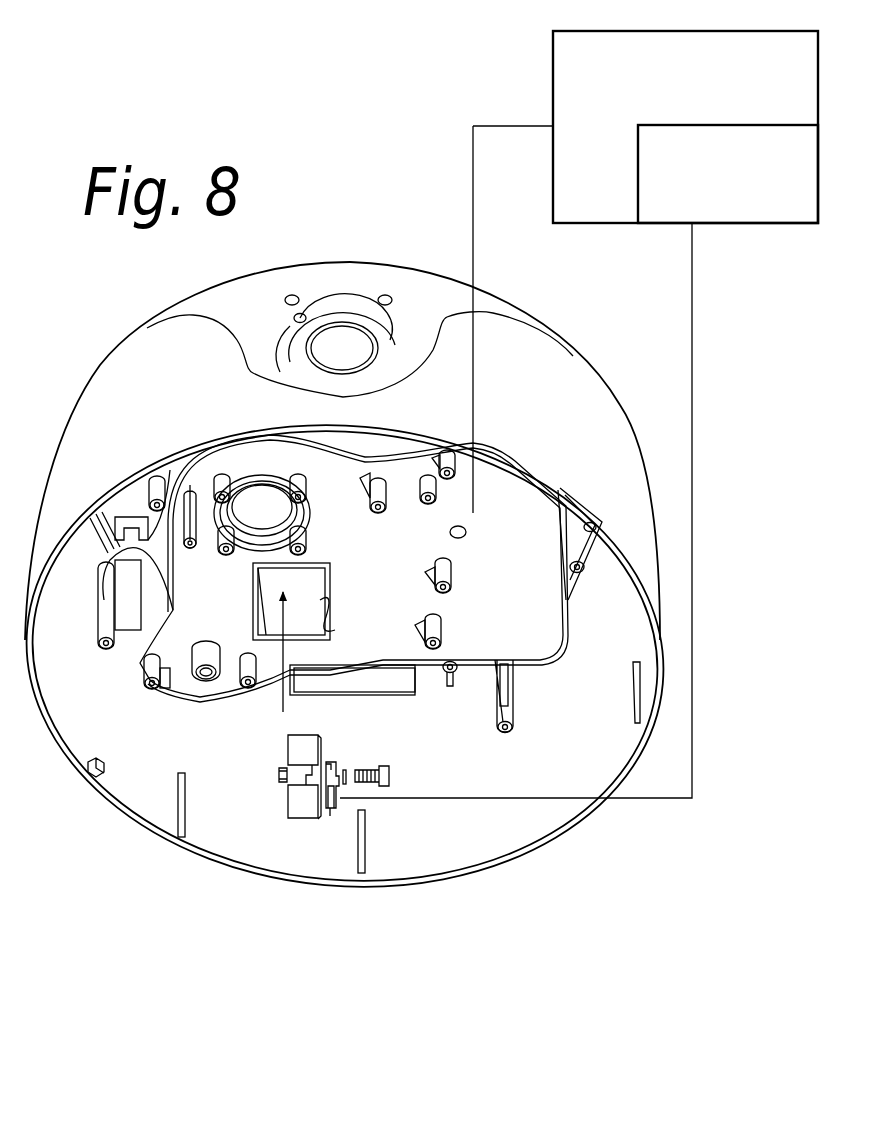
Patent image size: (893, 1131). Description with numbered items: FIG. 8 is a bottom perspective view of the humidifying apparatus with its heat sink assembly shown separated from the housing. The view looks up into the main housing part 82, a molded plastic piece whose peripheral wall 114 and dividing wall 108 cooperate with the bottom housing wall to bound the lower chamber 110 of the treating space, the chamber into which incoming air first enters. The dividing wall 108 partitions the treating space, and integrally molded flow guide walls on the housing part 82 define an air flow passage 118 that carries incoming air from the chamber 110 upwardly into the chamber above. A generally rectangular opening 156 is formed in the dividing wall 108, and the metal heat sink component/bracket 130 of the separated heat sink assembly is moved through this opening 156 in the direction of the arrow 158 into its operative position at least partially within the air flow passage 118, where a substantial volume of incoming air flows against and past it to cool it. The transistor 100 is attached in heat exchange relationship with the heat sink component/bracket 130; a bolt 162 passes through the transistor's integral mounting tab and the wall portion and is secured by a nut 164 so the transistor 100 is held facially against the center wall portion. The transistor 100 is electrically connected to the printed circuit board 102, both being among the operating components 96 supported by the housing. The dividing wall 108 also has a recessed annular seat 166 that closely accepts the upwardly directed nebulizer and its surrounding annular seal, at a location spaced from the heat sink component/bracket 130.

The main housing part 82 is at (110, 405).
The operating components 96 is at (780, 83).
The transistor 100 is at (332, 760).
The printed circuit board 102 is at (682, 189).
The dividing wall 108 is at (320, 522).
The chamber 110 is at (495, 818).
The peripheral wall 114 is at (596, 462).
The air flow passage 118 is at (308, 579).
The heat sink component/bracket 130 is at (302, 808).
The generally rectangular opening 156 is at (318, 623).
The arrow 158 is at (283, 700).
The bolt 162 is at (390, 775).
The nut 164 is at (280, 776).
The recessed annular seat 166 is at (255, 520).